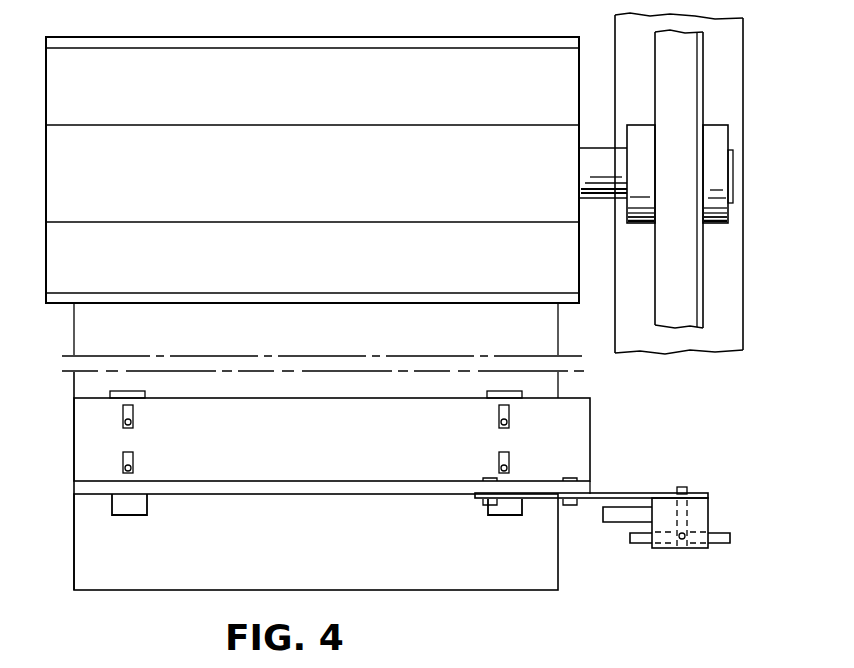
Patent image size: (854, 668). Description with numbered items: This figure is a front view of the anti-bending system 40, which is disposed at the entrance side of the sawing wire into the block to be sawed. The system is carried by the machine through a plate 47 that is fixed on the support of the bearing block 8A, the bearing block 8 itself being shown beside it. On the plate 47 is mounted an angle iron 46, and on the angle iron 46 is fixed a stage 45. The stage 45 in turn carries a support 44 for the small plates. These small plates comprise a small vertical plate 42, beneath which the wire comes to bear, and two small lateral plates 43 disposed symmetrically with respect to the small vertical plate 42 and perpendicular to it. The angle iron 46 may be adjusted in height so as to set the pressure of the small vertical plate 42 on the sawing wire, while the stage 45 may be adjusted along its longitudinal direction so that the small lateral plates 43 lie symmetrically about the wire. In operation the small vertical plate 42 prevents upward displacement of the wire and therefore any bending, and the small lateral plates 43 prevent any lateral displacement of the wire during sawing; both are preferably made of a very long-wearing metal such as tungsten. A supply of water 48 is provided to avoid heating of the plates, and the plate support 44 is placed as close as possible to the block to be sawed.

The bearing block 8 is at (683, 307).
The support of the bearing block 8A is at (321, 176).
The anti-bending system 40 is at (706, 463).
The small vertical plate 42 is at (685, 487).
The small lateral plates 43 is at (722, 543).
The support 44 is at (705, 517).
The stage 45 is at (612, 493).
The angle iron 46 is at (381, 463).
The plate 47 is at (97, 385).
The supply of water 48 is at (641, 517).